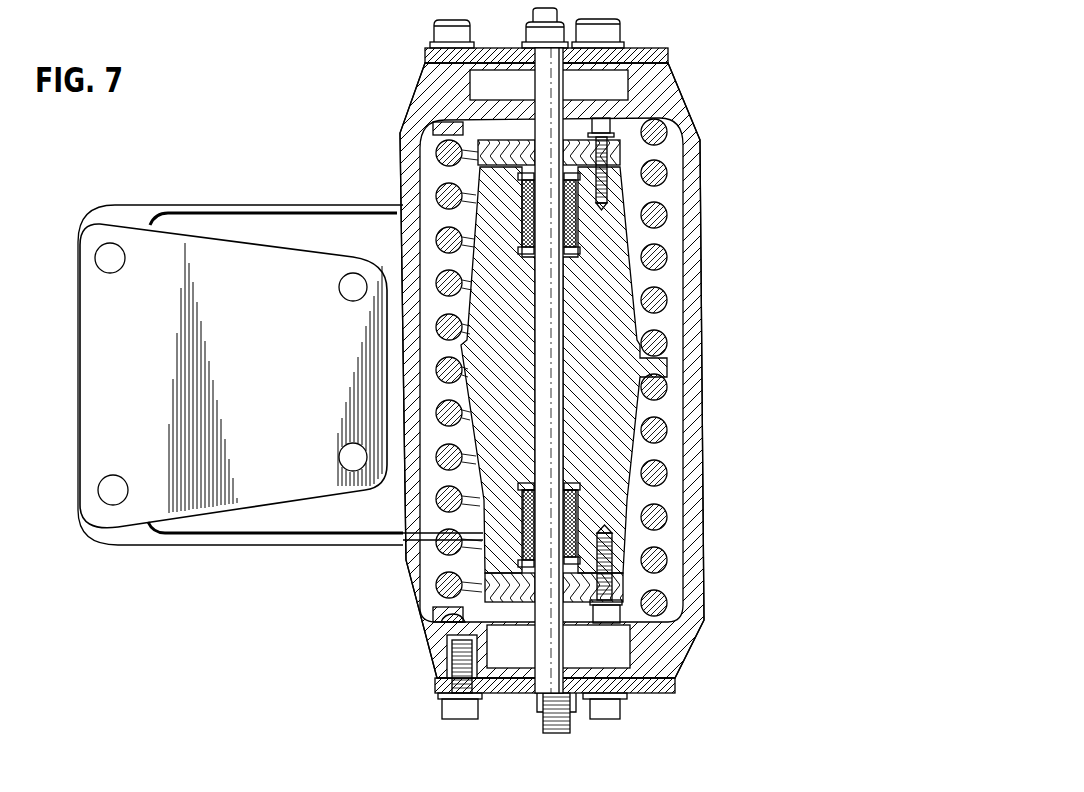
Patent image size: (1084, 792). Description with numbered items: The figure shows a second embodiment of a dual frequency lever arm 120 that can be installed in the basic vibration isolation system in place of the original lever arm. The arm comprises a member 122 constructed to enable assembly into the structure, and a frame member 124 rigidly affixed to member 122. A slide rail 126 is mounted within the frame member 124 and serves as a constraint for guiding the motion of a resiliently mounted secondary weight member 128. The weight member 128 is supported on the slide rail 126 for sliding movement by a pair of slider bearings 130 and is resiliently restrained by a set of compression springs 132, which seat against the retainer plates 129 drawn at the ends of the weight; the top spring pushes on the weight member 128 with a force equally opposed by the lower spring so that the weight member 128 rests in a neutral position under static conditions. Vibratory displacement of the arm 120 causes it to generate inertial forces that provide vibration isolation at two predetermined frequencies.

The dual frequency lever arm 120 is at (381, 118).
The member 122 is at (282, 205).
The frame member 124 is at (673, 120).
The slide rail 126 is at (550, 89).
The secondary weight member 128 is at (609, 400).
The spring retainer plate 129 is at (512, 140).
The slider bearings 130 is at (579, 214).
The compression springs 132 is at (412, 172).